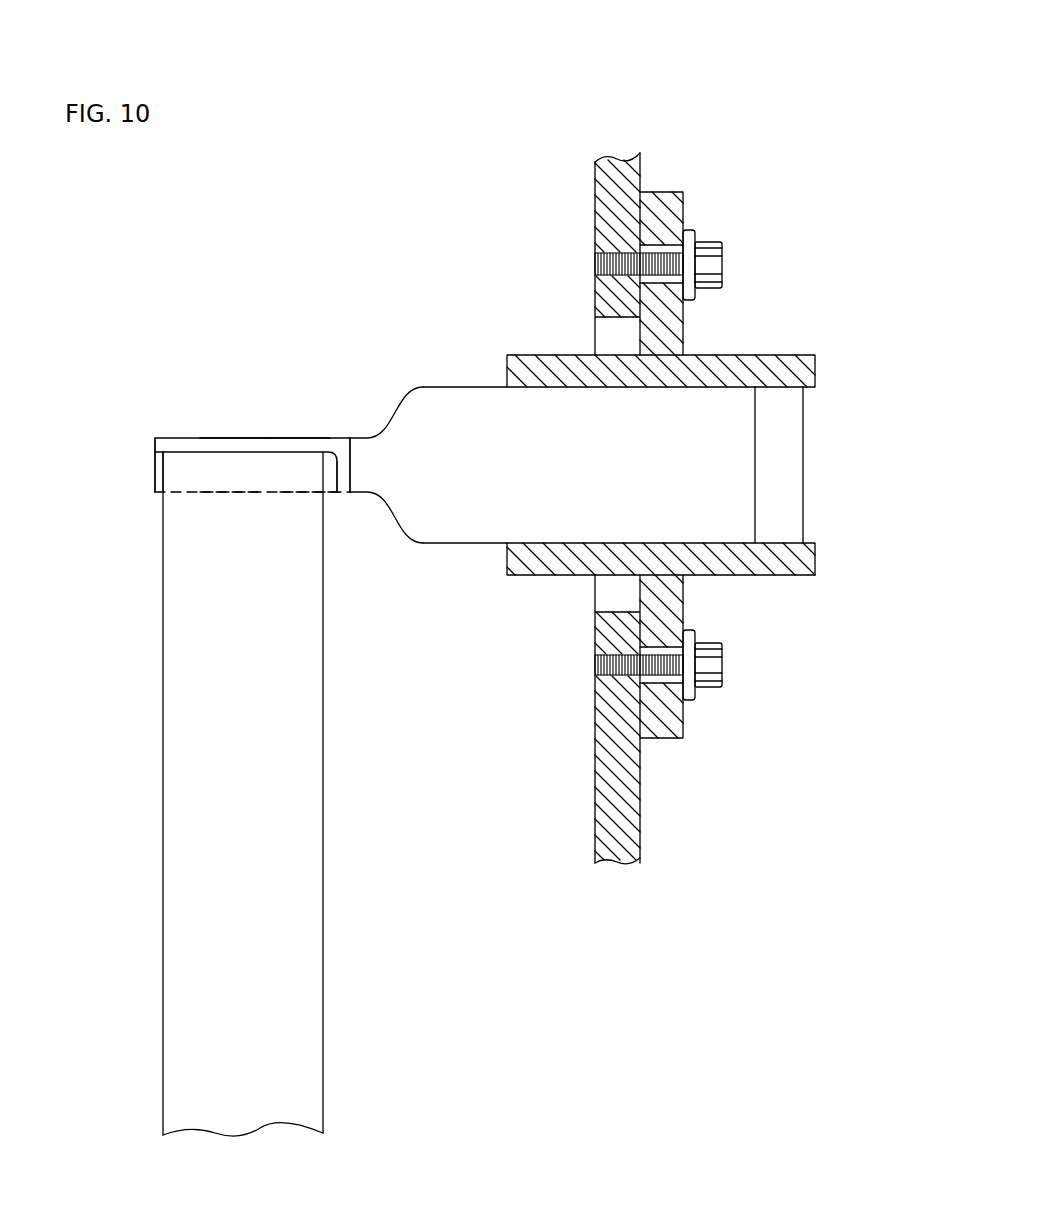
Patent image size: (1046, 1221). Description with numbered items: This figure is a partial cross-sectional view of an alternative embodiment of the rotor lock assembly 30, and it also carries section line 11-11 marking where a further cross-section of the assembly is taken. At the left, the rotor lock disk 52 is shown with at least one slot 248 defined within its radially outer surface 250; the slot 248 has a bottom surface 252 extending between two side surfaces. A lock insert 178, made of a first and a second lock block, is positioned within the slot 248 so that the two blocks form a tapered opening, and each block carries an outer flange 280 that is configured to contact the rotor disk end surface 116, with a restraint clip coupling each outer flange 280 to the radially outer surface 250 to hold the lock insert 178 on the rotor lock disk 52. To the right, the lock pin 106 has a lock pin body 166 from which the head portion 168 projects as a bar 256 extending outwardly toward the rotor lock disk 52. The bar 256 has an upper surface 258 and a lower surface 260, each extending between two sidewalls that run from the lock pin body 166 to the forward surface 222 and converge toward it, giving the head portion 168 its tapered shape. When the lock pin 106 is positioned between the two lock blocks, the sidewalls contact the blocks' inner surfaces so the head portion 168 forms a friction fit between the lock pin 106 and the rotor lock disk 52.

The rotor lock assembly 30 is at (726, 176).
The lock pin body 166 is at (472, 385).
The lock pin 106 is at (433, 322).
The head portion 168 is at (332, 420).
The lock insert 178 is at (122, 392).
The forward surface 222 is at (155, 440).
The radially outer surface 250 is at (163, 452).
The slot 248 is at (143, 482).
The upper surface 258 is at (248, 436).
The bar 256 is at (297, 436).
The lower surface 260 is at (340, 493).
The bottom surface 252 is at (254, 490).
The outer flange 280 is at (332, 480).
The rotor disk end surface 116 is at (323, 686).
The rotor lock disk 52 is at (163, 807).
The section line 11- 11 is at (60, 490).